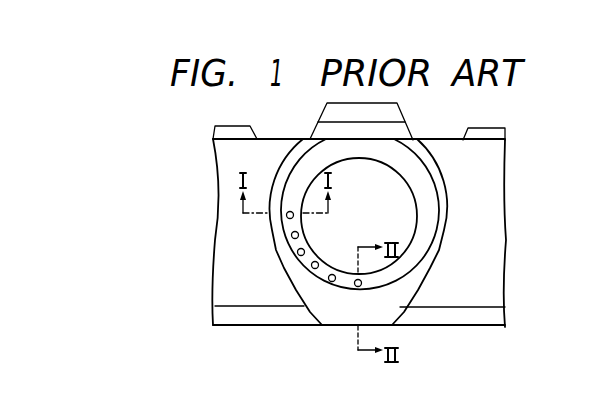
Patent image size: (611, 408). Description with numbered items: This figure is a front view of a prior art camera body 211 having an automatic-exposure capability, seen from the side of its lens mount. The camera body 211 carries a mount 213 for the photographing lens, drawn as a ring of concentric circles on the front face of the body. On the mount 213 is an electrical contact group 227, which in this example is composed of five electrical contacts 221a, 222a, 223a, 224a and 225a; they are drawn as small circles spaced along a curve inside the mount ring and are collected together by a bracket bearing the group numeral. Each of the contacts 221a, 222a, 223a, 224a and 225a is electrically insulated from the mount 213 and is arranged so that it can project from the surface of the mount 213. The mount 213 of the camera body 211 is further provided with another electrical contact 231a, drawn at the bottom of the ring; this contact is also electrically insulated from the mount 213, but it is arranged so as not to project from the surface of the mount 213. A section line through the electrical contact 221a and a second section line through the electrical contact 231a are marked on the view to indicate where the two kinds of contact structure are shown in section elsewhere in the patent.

The camera body 211 is at (565, 197).
The mount of the camera body 213 is at (397, 294).
The electrical contact 221a is at (287, 217).
The electrical contact 222a is at (292, 237).
The electrical contact 223a is at (298, 255).
The electrical contact 224a is at (312, 268).
The electrical contact 225a is at (330, 281).
The electrical contact group 227 is at (150, 220).
The electrical contact 231a is at (357, 287).